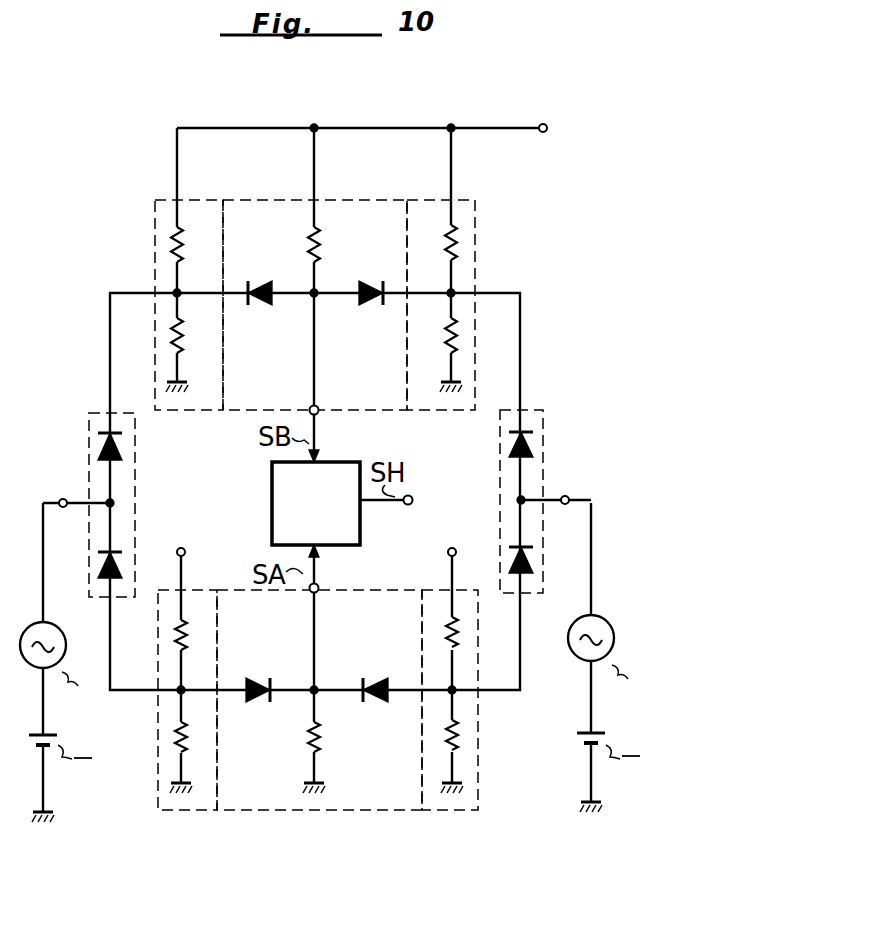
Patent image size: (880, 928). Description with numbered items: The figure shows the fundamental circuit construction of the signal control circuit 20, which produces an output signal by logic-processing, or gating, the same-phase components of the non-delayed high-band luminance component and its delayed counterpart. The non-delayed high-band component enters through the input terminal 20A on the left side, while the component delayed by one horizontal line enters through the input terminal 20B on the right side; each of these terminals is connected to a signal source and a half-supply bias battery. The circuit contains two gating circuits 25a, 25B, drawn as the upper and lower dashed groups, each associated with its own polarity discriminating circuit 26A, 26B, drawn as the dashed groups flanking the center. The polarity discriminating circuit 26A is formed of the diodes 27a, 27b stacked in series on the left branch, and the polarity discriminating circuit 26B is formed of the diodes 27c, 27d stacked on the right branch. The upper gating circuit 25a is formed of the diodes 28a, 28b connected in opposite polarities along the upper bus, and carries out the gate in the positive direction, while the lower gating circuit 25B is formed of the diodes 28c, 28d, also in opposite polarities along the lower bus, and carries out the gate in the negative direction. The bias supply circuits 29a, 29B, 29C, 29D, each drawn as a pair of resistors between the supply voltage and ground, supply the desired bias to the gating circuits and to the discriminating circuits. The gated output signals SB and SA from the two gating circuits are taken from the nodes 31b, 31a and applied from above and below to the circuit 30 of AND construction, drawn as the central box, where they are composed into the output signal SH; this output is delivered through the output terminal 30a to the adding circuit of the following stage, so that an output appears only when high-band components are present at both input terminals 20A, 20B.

The signal control circuit 20 is at (368, 106).
The input terminal 20A is at (63, 508).
The input terminal 20B is at (563, 483).
The gating circuit 25a is at (333, 201).
The gating circuit 25B is at (337, 812).
The polarity discriminating circuit 26A is at (134, 486).
The polarity discriminating circuit 26B is at (545, 440).
The diode 27a is at (102, 446).
The diode 27b is at (118, 580).
The diode 27c is at (508, 440).
The diode 27d is at (527, 576).
The diode 28a is at (262, 306).
The diode 28b is at (373, 306).
The diode 28c is at (262, 703).
The diode 28d is at (375, 703).
The bias supply circuit 29a is at (199, 201).
The bias supply circuit 29B is at (477, 222).
The bias supply circuit 29C is at (201, 812).
The bias supply circuit 29D is at (461, 812).
The circuit of AND construction 30 is at (272, 515).
The output terminal 30a is at (412, 498).
The first input node 31a is at (318, 586).
The second input node 31b is at (318, 412).